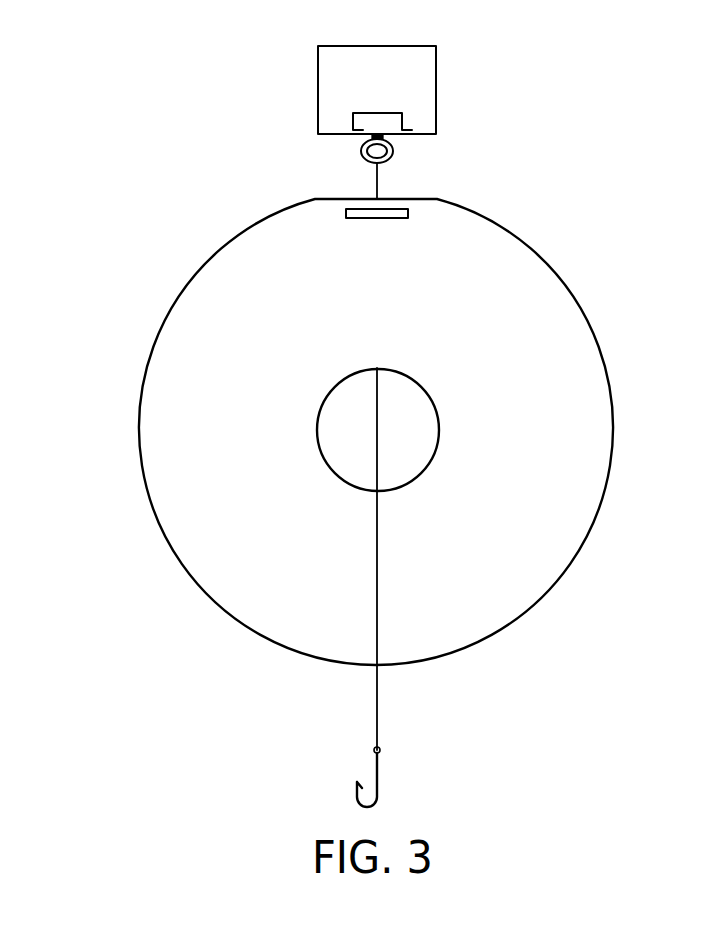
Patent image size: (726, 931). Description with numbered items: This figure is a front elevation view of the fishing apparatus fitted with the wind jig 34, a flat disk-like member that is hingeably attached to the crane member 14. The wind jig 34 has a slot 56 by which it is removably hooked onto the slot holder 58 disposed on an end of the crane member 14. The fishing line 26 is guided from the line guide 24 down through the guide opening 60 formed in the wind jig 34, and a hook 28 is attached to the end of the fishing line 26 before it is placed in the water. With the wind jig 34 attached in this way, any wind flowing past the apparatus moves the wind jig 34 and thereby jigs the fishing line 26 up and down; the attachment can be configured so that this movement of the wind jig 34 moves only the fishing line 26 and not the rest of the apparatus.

The crane member 14 is at (373, 87).
The slot holder 58 is at (362, 120).
The line guide 24 is at (393, 155).
The fishing line 26 is at (377, 182).
The wind jig 34 is at (447, 338).
The slot 56 is at (392, 215).
The guide opening 60 is at (403, 442).
The hook 28 is at (379, 773).